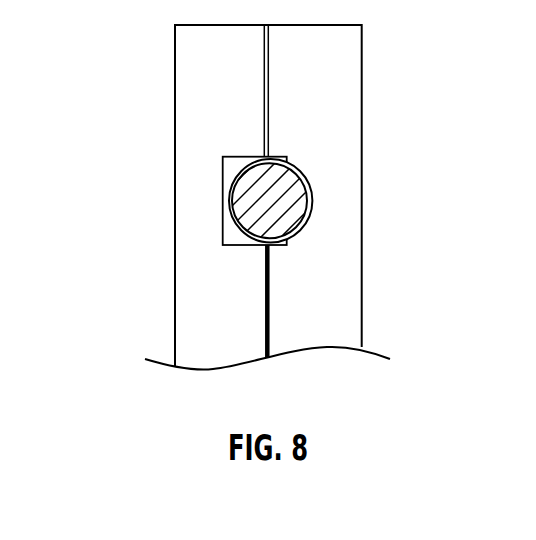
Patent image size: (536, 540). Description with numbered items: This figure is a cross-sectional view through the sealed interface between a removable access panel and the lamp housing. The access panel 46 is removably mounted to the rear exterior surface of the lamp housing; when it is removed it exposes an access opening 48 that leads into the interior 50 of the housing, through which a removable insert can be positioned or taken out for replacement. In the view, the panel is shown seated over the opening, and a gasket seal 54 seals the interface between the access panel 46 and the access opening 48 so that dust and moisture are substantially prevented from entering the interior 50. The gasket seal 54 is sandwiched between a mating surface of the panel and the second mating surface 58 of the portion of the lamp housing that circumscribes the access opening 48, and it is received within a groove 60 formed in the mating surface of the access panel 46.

The access panel 46 is at (351, 72).
The access opening 48 is at (171, 384).
The interior 50 is at (248, 197).
The gasket seal 54 is at (313, 200).
The second mating surface 58 is at (221, 215).
The groove 60 is at (313, 208).